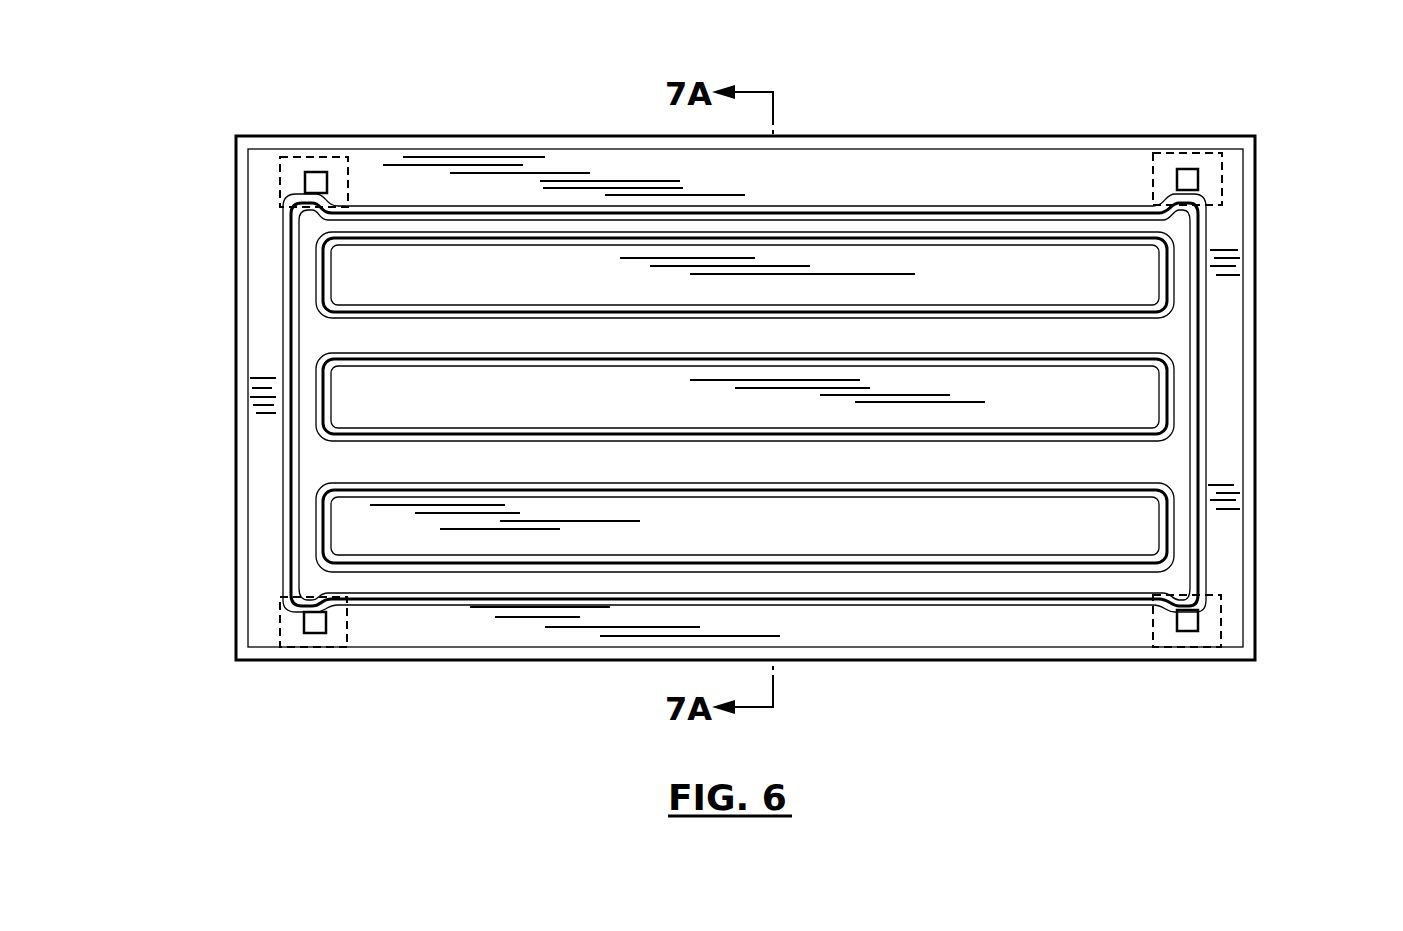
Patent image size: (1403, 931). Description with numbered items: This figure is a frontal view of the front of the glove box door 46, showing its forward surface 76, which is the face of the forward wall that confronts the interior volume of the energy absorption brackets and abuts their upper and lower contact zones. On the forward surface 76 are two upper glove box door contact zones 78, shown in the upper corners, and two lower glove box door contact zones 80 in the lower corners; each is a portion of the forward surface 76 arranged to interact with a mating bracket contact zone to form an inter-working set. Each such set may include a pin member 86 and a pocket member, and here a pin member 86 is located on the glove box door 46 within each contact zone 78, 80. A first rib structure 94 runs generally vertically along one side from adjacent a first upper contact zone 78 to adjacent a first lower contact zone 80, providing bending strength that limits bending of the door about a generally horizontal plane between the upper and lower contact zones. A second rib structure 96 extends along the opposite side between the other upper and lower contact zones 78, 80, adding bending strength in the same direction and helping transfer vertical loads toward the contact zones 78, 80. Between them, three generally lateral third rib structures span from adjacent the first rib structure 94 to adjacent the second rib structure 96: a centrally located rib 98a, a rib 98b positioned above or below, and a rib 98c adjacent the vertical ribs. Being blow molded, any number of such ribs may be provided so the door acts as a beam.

The glove box door 46 is at (862, 110).
The forward surface 76 is at (583, 172).
The upper glove box door contact zone 78 is at (342, 157).
The lower glove box door contact zone 80 is at (288, 640).
The pin member 86 is at (317, 185).
The first rib structure 94 is at (1226, 405).
The second rib structure 96 is at (265, 378).
The third rib structure 98a is at (1070, 416).
The third rib structure 98b is at (1010, 541).
The third rib structure 98c is at (1040, 294).